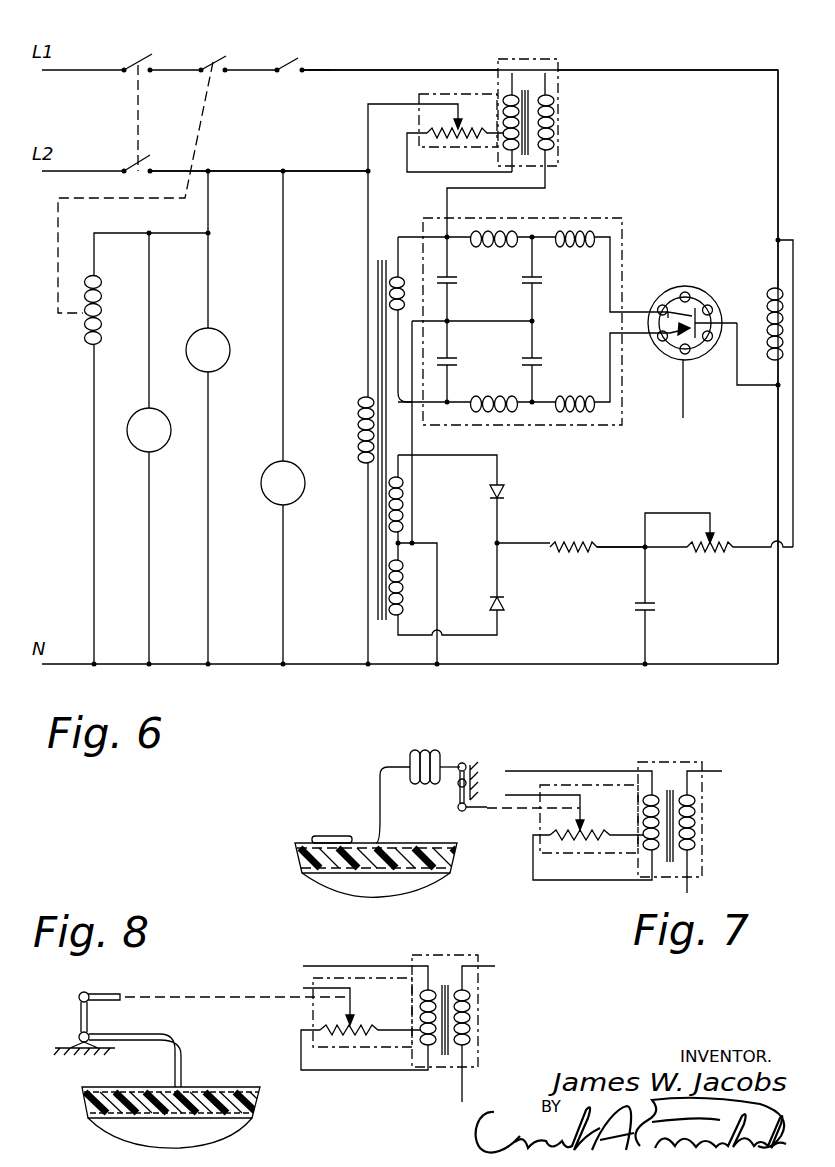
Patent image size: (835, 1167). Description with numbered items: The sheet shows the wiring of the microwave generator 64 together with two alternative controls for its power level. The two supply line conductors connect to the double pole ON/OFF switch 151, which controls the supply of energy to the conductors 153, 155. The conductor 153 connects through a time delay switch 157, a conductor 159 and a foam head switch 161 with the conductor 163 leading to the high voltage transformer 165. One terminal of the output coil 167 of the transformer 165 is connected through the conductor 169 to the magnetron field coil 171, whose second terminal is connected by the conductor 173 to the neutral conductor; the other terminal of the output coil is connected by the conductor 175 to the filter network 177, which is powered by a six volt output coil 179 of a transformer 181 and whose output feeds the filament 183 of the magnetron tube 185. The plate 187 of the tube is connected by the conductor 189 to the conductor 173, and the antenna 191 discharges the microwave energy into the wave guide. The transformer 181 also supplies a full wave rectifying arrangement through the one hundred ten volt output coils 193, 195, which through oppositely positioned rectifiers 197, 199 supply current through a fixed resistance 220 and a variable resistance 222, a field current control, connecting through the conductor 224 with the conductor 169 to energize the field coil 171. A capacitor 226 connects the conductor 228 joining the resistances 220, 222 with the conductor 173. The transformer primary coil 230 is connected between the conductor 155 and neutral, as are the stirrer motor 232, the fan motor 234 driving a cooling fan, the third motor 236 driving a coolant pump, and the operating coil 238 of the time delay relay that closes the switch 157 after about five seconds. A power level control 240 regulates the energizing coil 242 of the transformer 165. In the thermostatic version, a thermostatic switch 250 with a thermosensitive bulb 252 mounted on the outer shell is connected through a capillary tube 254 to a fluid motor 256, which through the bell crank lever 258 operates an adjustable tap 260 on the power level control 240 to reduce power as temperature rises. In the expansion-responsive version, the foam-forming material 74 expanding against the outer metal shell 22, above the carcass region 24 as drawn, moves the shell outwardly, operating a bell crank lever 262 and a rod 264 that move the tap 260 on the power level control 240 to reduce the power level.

In FIG. 7, the outer metal shell 22 is at (297, 843).
In FIG. 8, the outer metal shell 22 is at (215, 1087).
In FIG. 7, the belt carcass 24 is at (386, 878).
In FIG. 8, the belt carcass 24 is at (108, 1122).
In FIG. 6, the microwave generator 64 is at (740, 92).
In FIG. 7, the foam-forming material 74 is at (302, 860).
In FIG. 8, the foam-forming material 74 is at (86, 1105).
In FIG. 6, the double pole ON/OFF switch 151 is at (134, 162).
In FIG. 6, the conductor 153 is at (170, 70).
In FIG. 6, the conductor 155 is at (248, 168).
In FIG. 6, the time delay switch 157 is at (218, 58).
In FIG. 6, the conductor 159 is at (256, 68).
In FIG. 6, the foam head switch 161 is at (300, 62).
In FIG. 6, the conductor 163 is at (413, 70).
In FIG. 6, the high voltage transformer 165 is at (538, 59).
In FIG. 7, the high voltage transformer 165 is at (693, 762).
In FIG. 8, the high voltage transformer 165 is at (470, 955).
In FIG. 6, the output coil 167 is at (554, 115).
In FIG. 7, the output coil 167 is at (695, 818).
In FIG. 8, the output coil 167 is at (470, 1008).
In FIG. 6, the conductor 169 is at (684, 70).
In FIG. 6, the magnetron field coil 171 is at (768, 305).
In FIG. 6, the conductor 173 is at (773, 588).
In FIG. 6, the conductor 175 is at (545, 182).
In FIG. 6, the filter network 177 is at (608, 218).
In FIG. 6, the six volt output coil 179 is at (402, 278).
In FIG. 6, the transformer 181 is at (378, 343).
In FIG. 6, the filament 183 is at (669, 352).
In FIG. 6, the magnetron tube 185 is at (692, 287).
In FIG. 6, the plate 187 is at (703, 358).
In FIG. 6, the conductor 189 is at (757, 387).
In FIG. 6, the antenna 191 is at (680, 393).
In FIG. 6, the 110 volt output coil 193 is at (404, 485).
In FIG. 6, the 110 volt output coil 195 is at (404, 583).
In FIG. 6, the rectifier 197 is at (505, 492).
In FIG. 6, the rectifier 199 is at (505, 600).
In FIG. 6, the fixed resistance 220 is at (576, 553).
In FIG. 6, the variable resistance 222 is at (712, 536).
In FIG. 6, the conductor 224 is at (793, 245).
In FIG. 6, the capacitor 226 is at (650, 608).
In FIG. 6, the conductor 228 is at (615, 545).
In FIG. 6, the transformer primary coil 230 is at (358, 430).
In FIG. 6, the motor 232 is at (270, 505).
In FIG. 6, the fan motor 234 is at (222, 330).
In FIG. 6, the third motor 236 is at (160, 452).
In FIG. 6, the operating coil 238 is at (86, 335).
In FIG. 6, the power level control 240 is at (420, 96).
In FIG. 7, the power level control 240 is at (560, 785).
In FIG. 8, the power level control 240 is at (356, 978).
In FIG. 6, the energizing coil 242 is at (506, 146).
In FIG. 7, the energizing coil 242 is at (645, 852).
In FIG. 8, the energizing coil 242 is at (421, 1045).
In FIG. 7, the thermostatic switch 250 is at (415, 752).
In FIG. 7, the thermosensitive bulb 252 is at (330, 836).
In FIG. 7, the capillary tube 254 is at (378, 782).
In FIG. 7, the fluid motor 256 is at (441, 755).
In FIG. 7, the bell crank lever 258 is at (457, 797).
In FIG. 7, the adjustable tap 260 is at (583, 800).
In FIG. 8, the adjustable tap 260 is at (354, 1006).
In FIG. 8, the bell crank lever 262 is at (150, 1036).
In FIG. 8, the rod 264 is at (100, 997).